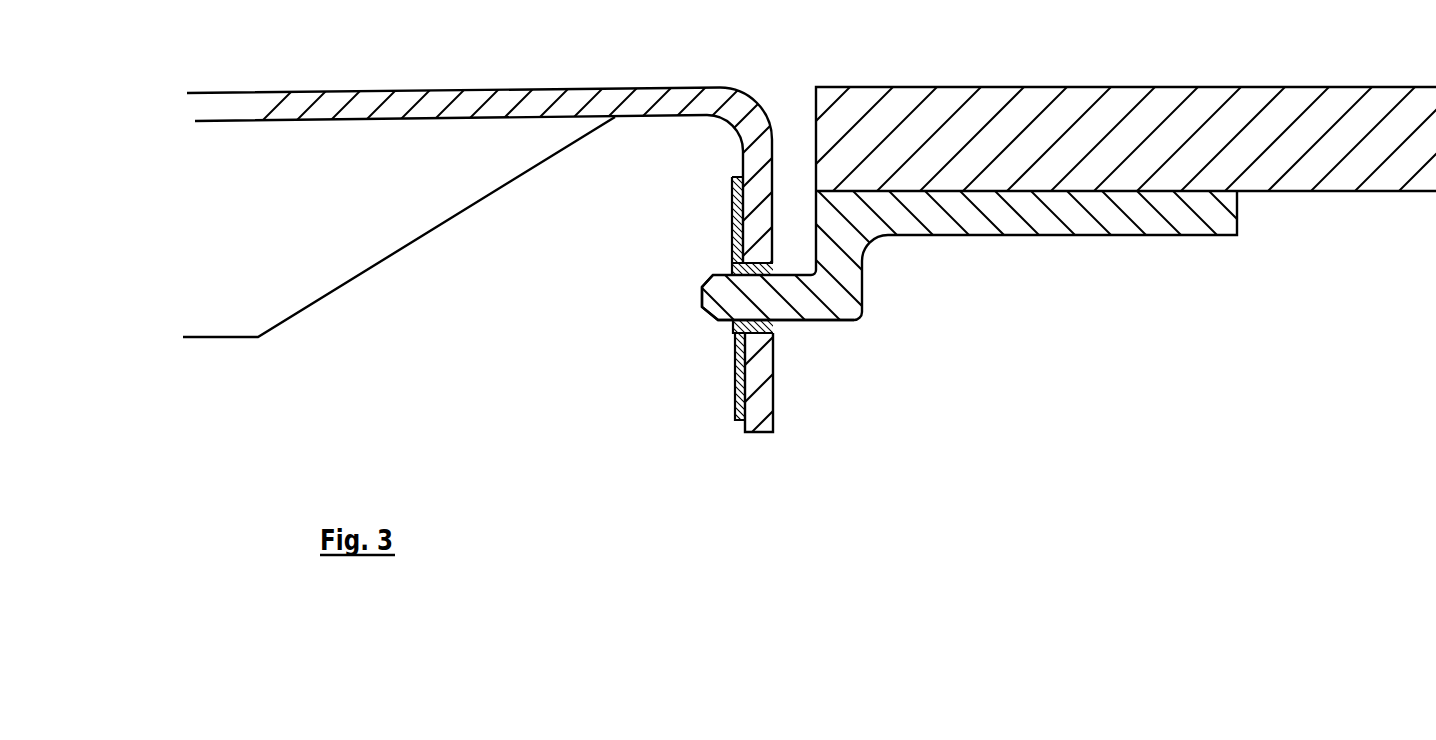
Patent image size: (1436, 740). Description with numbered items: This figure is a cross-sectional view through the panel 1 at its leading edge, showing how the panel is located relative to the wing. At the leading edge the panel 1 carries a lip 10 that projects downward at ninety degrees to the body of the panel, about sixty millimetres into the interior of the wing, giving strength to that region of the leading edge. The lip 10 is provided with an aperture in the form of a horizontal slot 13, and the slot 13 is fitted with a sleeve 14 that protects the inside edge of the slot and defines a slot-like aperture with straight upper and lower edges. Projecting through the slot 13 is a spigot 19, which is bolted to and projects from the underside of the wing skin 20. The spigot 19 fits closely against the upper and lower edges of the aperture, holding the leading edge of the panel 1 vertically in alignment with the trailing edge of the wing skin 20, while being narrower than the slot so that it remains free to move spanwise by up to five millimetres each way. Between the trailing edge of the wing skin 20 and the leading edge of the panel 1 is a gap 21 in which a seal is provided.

The panel 1 is at (470, 92).
The lip 10 is at (763, 400).
The slot 13 is at (778, 327).
The sleeve 14 is at (732, 222).
The spigot 19 is at (1013, 222).
The wing skin 20 is at (990, 98).
The gap 21 is at (787, 115).